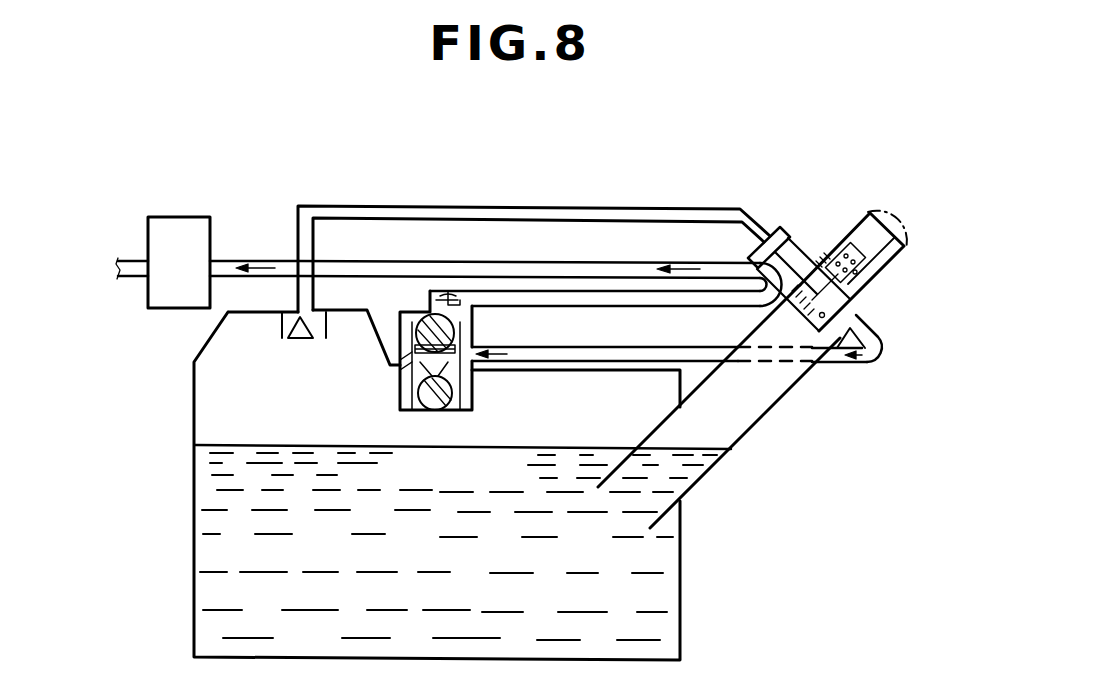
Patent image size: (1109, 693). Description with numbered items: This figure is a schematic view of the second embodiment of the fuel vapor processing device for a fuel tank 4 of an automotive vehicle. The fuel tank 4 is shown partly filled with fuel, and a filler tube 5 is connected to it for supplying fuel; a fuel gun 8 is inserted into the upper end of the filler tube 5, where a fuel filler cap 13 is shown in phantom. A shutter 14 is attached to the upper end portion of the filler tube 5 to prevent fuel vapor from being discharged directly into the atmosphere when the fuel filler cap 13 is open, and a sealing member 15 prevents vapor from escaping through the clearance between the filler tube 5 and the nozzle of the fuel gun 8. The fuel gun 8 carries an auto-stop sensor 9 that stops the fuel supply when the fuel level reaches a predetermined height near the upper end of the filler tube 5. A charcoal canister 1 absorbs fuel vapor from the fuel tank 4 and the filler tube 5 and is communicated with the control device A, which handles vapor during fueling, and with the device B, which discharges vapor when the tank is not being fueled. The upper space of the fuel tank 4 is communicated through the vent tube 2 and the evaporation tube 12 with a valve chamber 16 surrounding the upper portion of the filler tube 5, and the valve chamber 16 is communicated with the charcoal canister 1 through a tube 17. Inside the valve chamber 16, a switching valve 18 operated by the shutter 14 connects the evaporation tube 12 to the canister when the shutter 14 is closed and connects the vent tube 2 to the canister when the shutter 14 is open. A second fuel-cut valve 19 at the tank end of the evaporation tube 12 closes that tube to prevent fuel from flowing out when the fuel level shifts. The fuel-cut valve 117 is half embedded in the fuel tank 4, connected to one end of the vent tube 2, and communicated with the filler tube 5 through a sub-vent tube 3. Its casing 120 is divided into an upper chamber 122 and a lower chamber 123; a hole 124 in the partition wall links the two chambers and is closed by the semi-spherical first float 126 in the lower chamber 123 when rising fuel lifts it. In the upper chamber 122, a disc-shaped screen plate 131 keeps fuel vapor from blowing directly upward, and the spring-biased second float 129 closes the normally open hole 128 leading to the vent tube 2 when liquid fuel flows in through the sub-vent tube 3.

The charcoal canister 1 is at (183, 217).
The vent tube 2 is at (627, 306).
The sub-vent tube 3 is at (857, 366).
The fuel tank 4 is at (190, 456).
The filler tube 5 is at (757, 426).
The fuel gun 8 is at (850, 237).
The auto-stop sensor 9 is at (821, 362).
The evaporation tube 12 is at (365, 207).
The fuel filler cap 13 is at (900, 205).
The shutter 14 is at (812, 320).
The sealing member 15 is at (880, 348).
The valve chamber 16 is at (777, 233).
The tube 17 is at (627, 263).
The switching valve 18 is at (790, 243).
The second fuel-cut valve 19 is at (280, 330).
The fuel-cut valve 117 is at (481, 313).
The casing 120 is at (400, 400).
The upper chamber 122 is at (417, 310).
The lower chamber 123 is at (475, 402).
The hole 124 is at (400, 375).
The first float 126 is at (423, 411).
The hole 128 is at (462, 308).
The second float 129 is at (400, 313).
The screen plate 131 is at (452, 411).
The device A is at (552, 260).
The device B is at (326, 202).